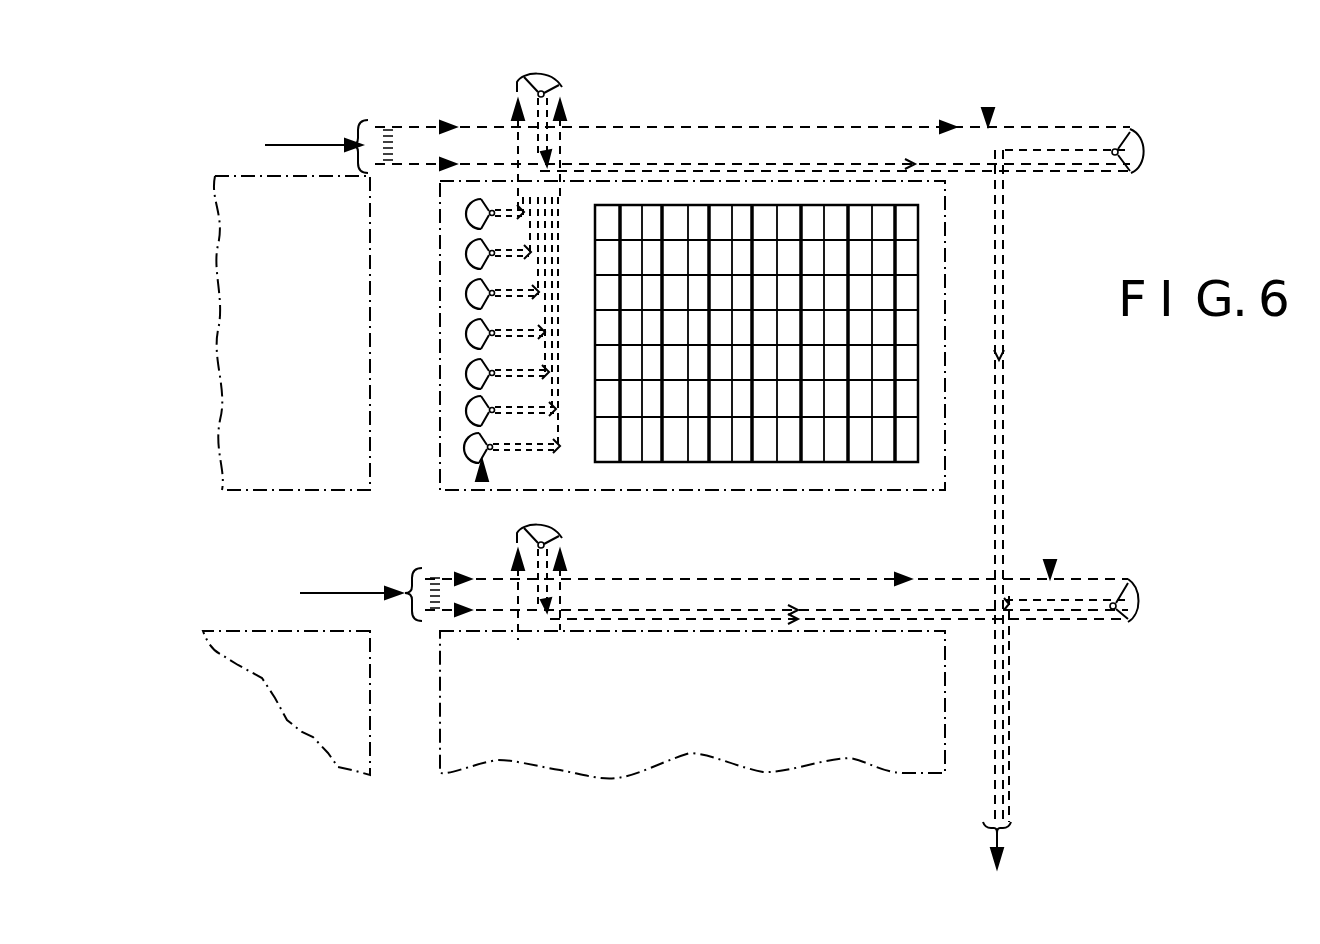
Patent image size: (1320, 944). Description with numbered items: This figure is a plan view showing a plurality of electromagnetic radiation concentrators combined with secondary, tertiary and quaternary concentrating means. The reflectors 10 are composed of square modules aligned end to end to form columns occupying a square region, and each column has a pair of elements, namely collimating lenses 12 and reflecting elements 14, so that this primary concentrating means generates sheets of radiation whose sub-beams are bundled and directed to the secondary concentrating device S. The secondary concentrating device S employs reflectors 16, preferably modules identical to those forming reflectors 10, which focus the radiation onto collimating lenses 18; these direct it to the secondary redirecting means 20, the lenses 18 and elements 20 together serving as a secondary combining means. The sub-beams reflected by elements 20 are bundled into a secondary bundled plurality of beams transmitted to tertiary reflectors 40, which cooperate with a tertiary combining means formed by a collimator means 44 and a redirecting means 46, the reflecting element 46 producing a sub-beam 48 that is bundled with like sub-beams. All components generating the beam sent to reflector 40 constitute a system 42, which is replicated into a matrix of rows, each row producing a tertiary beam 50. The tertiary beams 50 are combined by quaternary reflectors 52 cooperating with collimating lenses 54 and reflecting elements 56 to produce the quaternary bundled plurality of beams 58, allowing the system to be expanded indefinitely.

The reflectors 10 is at (715, 215).
The collimating lenses 12 is at (705, 450).
The reflecting elements 14 is at (660, 450).
The reflectors 16 is at (468, 300).
The collimating lenses 18 is at (488, 202).
The secondary redirecting means 20 is at (563, 450).
The tertiary reflectors 40 is at (531, 72).
The system 42 is at (357, 490).
The collimator means 44 is at (545, 90).
The redirecting means 46 is at (540, 166).
The sub-beam 48 is at (640, 165).
The tertiary beam 50 is at (988, 110).
The quaternary reflectors 52 is at (1143, 152).
The collimating lenses 54 is at (1107, 610).
The reflecting elements 56 is at (996, 152).
The quaternary bundled plurality of beams 58 is at (999, 840).
The secondary concentrating device S is at (482, 481).